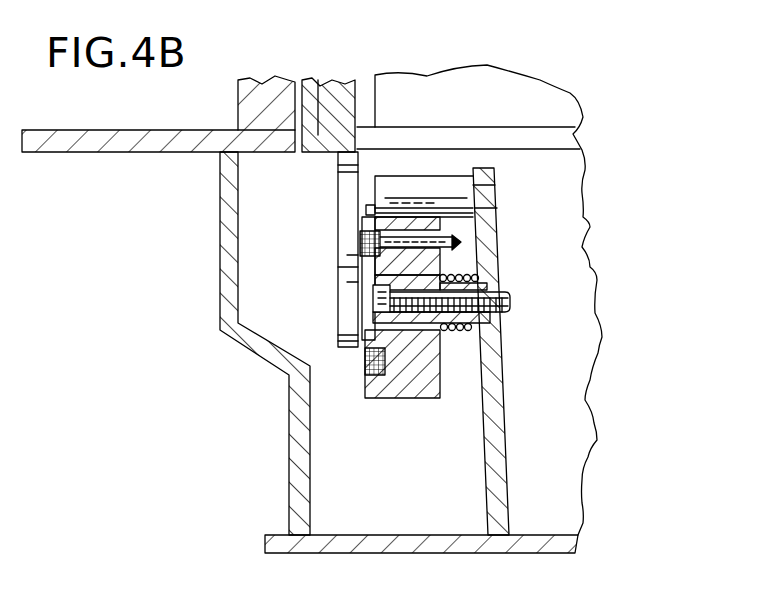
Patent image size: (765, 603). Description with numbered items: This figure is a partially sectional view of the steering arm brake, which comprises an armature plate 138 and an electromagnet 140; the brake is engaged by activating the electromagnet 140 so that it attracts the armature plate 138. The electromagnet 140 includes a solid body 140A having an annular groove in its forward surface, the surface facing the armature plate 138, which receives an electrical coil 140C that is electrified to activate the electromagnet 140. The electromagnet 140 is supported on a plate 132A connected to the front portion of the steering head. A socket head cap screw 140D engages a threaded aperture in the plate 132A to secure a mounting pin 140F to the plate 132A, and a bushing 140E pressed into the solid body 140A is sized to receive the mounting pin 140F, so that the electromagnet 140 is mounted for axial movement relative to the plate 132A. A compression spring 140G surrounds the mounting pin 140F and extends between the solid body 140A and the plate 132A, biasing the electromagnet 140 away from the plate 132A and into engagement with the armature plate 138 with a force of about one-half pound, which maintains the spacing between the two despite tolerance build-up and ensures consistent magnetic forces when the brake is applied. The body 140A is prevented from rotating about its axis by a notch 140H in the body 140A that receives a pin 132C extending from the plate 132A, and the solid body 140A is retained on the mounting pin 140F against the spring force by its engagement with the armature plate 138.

The plate 132A is at (507, 455).
The pin 132C is at (410, 185).
The armature plate 138 is at (345, 292).
The electromagnet 140 is at (357, 391).
The solid body 140A is at (411, 400).
The electrical coil 140C is at (364, 358).
The socket head cap screw 140D is at (478, 285).
The bushing 140E is at (420, 333).
The mounting pin 140F is at (505, 312).
The compression spring 140G is at (462, 278).
The notch 140H is at (368, 208).